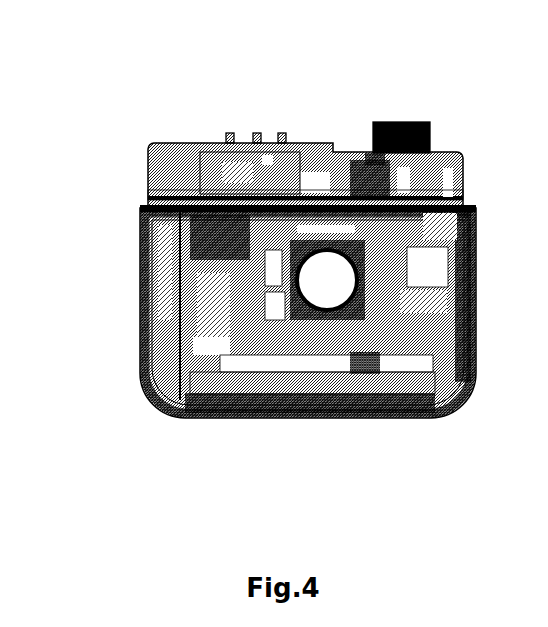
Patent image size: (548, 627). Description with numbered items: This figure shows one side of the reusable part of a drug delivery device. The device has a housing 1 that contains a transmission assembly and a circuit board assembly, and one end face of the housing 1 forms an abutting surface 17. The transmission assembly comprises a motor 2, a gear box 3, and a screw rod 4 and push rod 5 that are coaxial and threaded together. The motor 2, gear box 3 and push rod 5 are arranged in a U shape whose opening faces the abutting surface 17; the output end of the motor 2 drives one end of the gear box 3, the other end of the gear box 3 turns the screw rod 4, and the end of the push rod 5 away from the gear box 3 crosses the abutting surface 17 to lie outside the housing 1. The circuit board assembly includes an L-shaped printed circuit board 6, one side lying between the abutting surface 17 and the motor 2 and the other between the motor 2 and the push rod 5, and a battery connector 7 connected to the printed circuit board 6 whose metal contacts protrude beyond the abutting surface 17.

The housing 1 is at (140, 295).
The motor 2 is at (203, 303).
The gear box 3 is at (273, 380).
The screw rod 4 is at (405, 122).
The push rod 5 is at (375, 122).
The printed circuit board 6 is at (217, 163).
The battery connector 7 is at (150, 193).
The abutting surface 17 is at (167, 143).